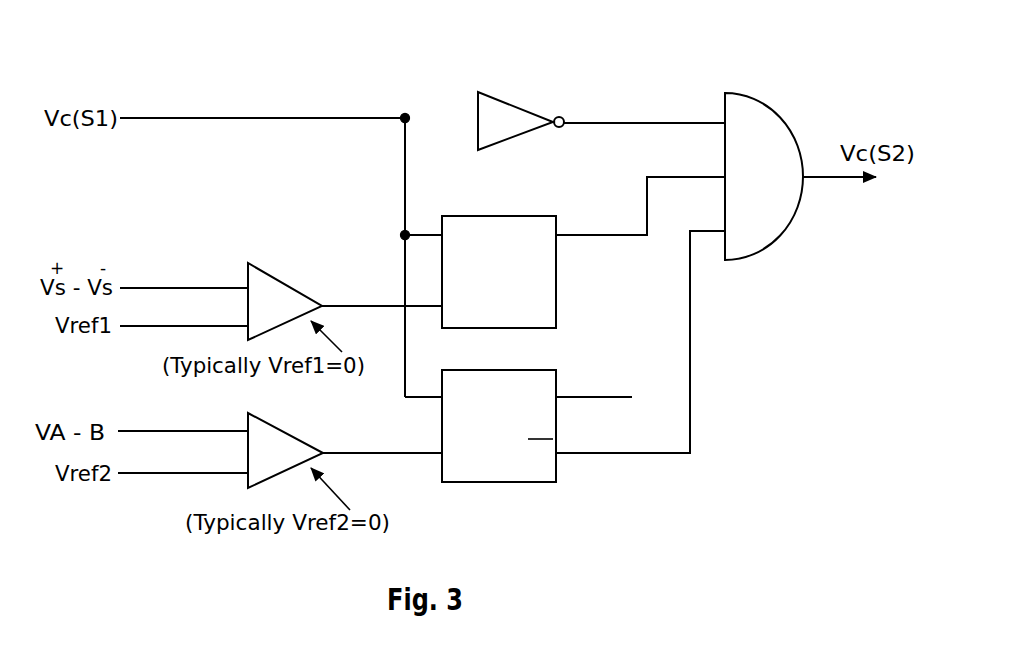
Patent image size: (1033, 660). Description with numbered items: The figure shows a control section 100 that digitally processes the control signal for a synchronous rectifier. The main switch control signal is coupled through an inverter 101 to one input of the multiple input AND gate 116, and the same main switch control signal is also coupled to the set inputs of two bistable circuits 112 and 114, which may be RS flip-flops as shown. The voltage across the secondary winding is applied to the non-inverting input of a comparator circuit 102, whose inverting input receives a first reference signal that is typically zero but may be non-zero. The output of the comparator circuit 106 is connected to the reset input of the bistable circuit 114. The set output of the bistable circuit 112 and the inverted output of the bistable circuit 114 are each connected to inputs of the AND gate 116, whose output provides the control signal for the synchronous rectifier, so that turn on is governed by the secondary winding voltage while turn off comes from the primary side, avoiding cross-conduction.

The control section 100 is at (230, 110).
The inverter 101 is at (523, 97).
The comparator circuit 102 is at (283, 263).
The comparator circuit 106 is at (318, 440).
The bistable circuit 112 is at (541, 211).
The bistable circuit 114 is at (563, 382).
The multiple input AND gate 116 is at (751, 82).